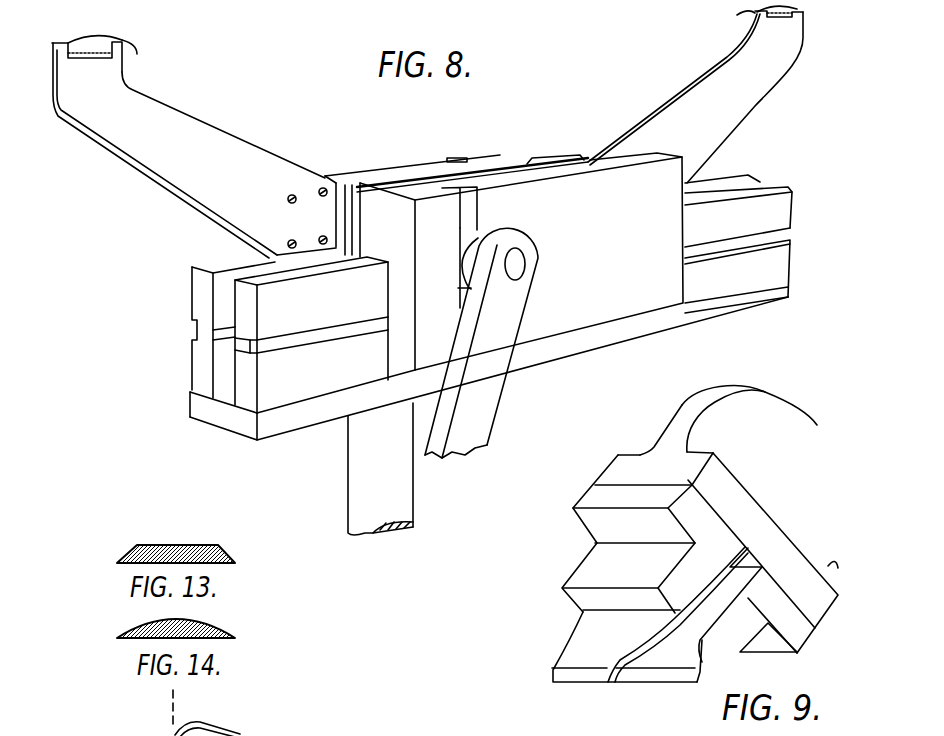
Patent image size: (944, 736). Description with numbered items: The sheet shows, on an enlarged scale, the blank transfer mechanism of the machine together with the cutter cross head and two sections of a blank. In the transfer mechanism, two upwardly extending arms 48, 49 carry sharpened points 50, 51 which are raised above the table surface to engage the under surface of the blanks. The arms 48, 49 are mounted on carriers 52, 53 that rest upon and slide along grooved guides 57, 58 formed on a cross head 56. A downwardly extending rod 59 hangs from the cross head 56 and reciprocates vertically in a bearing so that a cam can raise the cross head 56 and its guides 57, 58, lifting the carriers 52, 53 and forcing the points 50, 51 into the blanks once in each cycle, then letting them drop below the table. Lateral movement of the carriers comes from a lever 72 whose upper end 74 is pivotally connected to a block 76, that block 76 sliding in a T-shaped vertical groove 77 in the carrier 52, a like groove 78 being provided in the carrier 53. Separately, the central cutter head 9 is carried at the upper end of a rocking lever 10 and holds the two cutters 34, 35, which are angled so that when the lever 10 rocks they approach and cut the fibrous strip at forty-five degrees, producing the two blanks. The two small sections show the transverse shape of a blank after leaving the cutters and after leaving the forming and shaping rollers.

In FIG. 9, the central cutter head 9 is at (637, 532).
In FIG. 9, the rocking lever 10 is at (739, 524).
In FIG. 9, the cutter 34 is at (577, 647).
In FIG. 9, the cutter 35 is at (670, 662).
In FIG. 8, the upwardly extending arm 48 is at (695, 94).
In FIG. 8, the upwardly extending arm 49 is at (194, 147).
In FIG. 8, the sharpened point 50 is at (733, 17).
In FIG. 8, the sharpened point 51 is at (146, 53).
In FIG. 8, the carrier 52 is at (521, 261).
In FIG. 8, the carrier 53 is at (397, 158).
In FIG. 8, the cross head 56 is at (295, 422).
In FIG. 8, the grooved guide 57 is at (311, 335).
In FIG. 8, the grooved guide 58 is at (192, 295).
In FIG. 8, the downwardly extending rod 59 is at (380, 469).
In FIG. 8, the lever 72 is at (481, 343).
In FIG. 8, the upper end of lever 74 is at (517, 268).
In FIG. 8, the block 76 is at (474, 236).
In FIG. 8, the T-shaped vertical groove 77 is at (467, 188).
In FIG. 8, the T-shaped vertical groove 78 is at (450, 160).